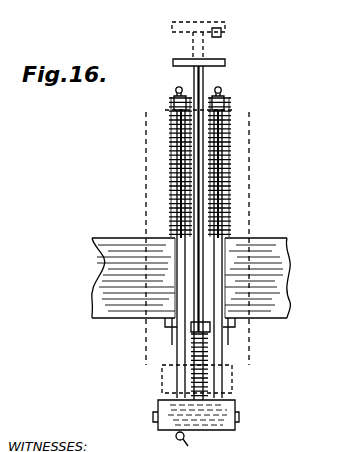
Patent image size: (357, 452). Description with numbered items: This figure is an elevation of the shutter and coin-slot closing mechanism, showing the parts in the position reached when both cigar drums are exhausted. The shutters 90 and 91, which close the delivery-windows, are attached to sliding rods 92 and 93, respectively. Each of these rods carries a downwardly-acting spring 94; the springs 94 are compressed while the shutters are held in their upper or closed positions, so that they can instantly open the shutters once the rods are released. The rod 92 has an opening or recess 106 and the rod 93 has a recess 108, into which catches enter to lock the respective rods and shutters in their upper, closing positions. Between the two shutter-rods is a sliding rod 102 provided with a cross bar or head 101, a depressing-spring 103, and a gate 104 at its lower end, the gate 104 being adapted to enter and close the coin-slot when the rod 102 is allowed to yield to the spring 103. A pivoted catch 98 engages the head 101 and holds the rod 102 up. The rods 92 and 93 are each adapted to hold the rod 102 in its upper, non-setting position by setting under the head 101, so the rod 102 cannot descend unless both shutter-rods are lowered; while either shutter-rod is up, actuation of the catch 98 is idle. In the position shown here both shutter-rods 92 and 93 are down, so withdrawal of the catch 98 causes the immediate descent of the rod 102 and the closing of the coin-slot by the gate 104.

The pivoted catch 98 is at (221, 33).
The cross bar or head 101 is at (176, 63).
The sliding rod 102 is at (206, 73).
The recess 108 is at (176, 162).
The opening or recess 106 is at (225, 156).
The downwardly-acting springs 94 is at (178, 177).
The shutter 90 is at (191, 278).
The shutter 91 is at (136, 278).
The sliding rod 93 is at (172, 345).
The sliding rod 92 is at (216, 340).
The depressing-spring 103 is at (176, 376).
The gate 104 is at (239, 408).